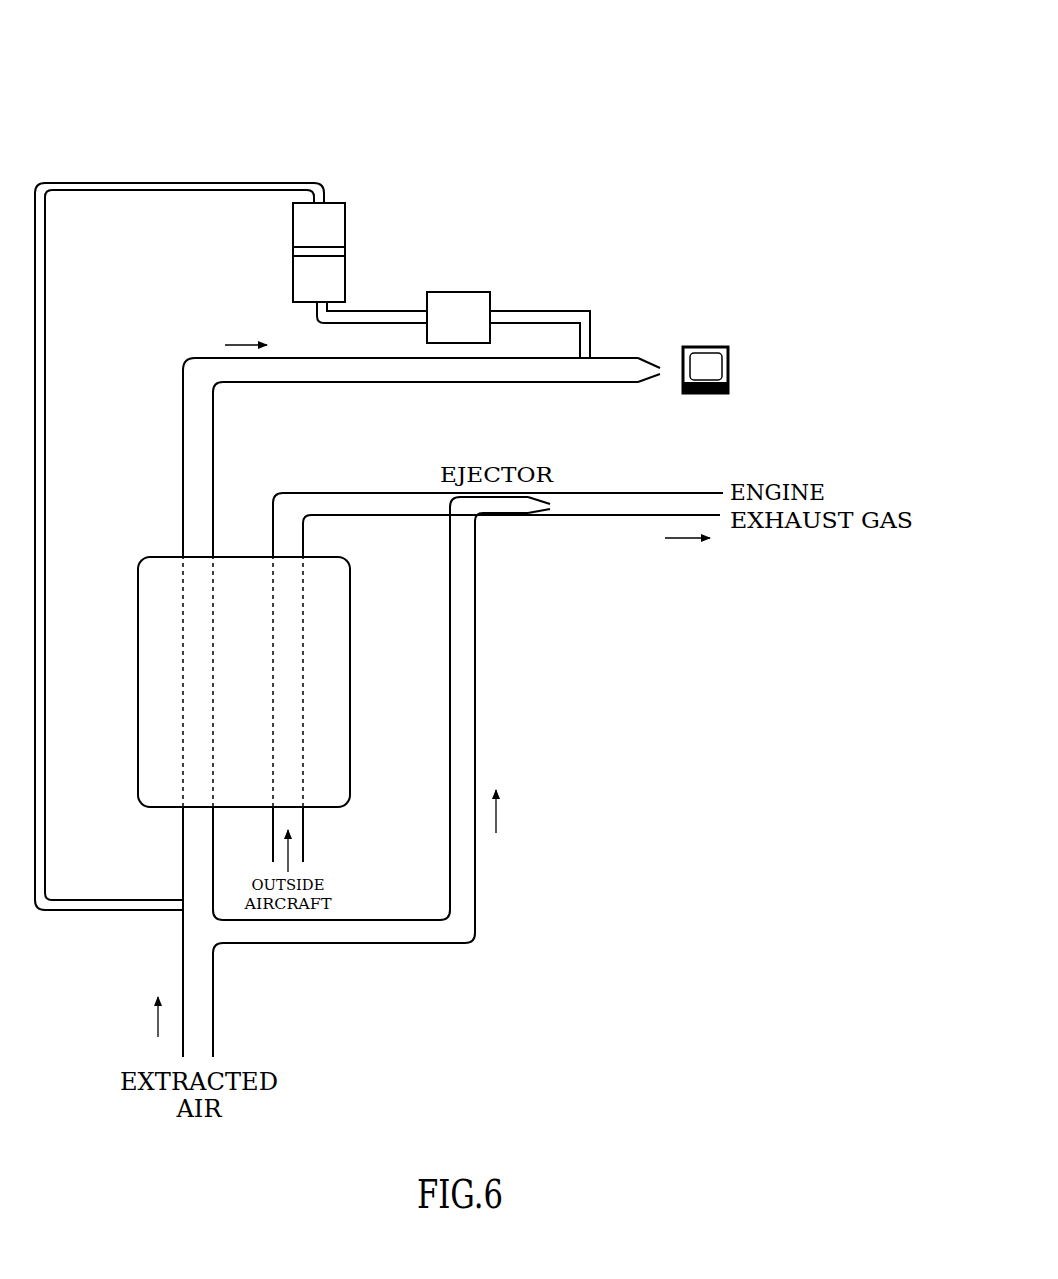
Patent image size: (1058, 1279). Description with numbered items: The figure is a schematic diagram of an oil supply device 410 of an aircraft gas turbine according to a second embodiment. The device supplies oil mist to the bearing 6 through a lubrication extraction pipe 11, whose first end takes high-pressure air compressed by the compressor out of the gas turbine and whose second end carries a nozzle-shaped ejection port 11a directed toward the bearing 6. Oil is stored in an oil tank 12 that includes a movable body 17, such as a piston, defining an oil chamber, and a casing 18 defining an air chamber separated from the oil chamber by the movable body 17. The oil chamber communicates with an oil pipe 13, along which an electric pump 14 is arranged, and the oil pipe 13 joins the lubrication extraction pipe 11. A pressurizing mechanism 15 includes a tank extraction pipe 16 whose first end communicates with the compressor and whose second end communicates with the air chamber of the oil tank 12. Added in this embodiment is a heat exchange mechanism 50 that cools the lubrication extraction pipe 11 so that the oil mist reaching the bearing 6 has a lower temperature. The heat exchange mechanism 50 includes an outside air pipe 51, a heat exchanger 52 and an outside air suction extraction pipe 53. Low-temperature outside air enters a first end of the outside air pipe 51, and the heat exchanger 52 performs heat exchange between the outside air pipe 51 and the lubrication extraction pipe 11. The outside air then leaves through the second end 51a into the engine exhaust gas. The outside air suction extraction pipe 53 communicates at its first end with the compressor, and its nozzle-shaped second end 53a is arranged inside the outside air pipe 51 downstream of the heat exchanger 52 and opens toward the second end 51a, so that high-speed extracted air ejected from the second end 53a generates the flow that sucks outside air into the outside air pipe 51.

The oil supply device 410 is at (226, 118).
The tank extraction pipe 16 is at (107, 182).
The pressurizing mechanism 15 is at (335, 175).
The oil tank 12 is at (256, 252).
The casing 18 is at (293, 214).
The movable body 17 is at (277, 277).
The electric pump 14 is at (456, 291).
The oil pipe 13 is at (567, 311).
The lubrication extraction pipe 11 is at (370, 384).
The ejection port 11a is at (660, 380).
The bearing 6 is at (730, 368).
The heat exchanger 52 is at (148, 557).
The heat exchange mechanism 50 is at (515, 713).
The outside air pipe 51 is at (400, 517).
The second end of outside air pipe 51a is at (721, 517).
The outside air suction extraction pipe 53 is at (476, 693).
The second end of outside air suction extraction pipe 53a is at (545, 511).